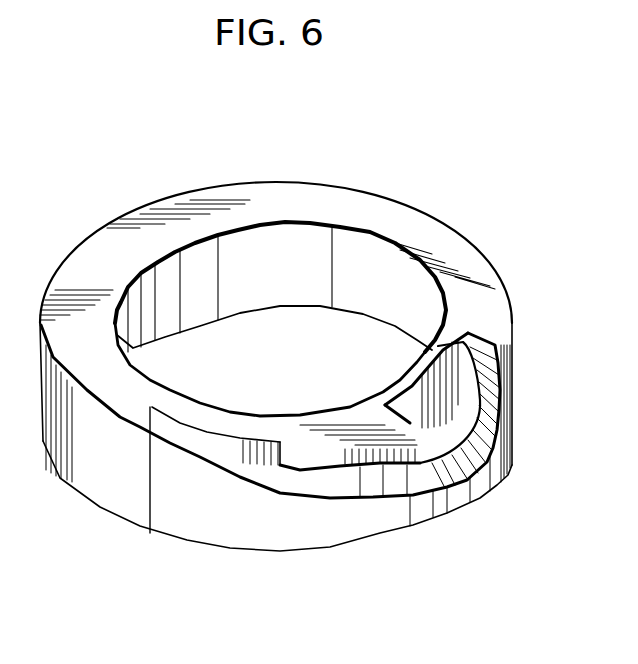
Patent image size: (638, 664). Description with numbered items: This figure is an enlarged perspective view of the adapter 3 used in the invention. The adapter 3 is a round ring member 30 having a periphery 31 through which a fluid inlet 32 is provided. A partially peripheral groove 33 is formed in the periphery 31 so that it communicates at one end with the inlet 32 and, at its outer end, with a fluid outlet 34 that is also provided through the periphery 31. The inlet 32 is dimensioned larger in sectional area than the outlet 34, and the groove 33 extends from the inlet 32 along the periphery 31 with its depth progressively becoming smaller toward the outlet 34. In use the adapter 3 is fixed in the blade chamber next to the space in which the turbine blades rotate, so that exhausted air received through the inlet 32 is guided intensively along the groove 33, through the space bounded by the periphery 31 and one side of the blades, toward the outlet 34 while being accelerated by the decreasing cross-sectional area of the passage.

The adapter 3 is at (315, 353).
The round ring member 30 is at (318, 180).
The periphery 31 is at (387, 463).
The fluid inlet 32 is at (443, 387).
The partially peripheral groove 33 is at (308, 483).
The fluid outlet 34 is at (237, 448).